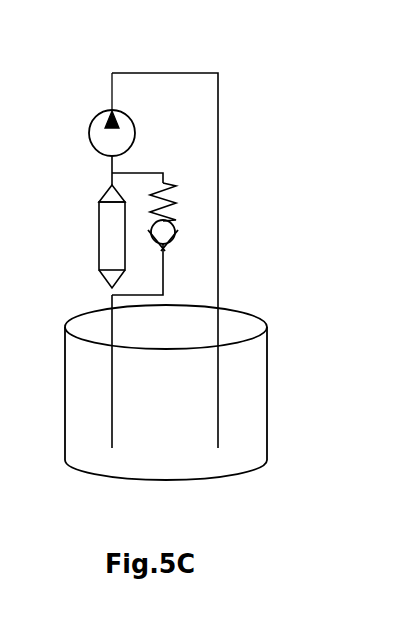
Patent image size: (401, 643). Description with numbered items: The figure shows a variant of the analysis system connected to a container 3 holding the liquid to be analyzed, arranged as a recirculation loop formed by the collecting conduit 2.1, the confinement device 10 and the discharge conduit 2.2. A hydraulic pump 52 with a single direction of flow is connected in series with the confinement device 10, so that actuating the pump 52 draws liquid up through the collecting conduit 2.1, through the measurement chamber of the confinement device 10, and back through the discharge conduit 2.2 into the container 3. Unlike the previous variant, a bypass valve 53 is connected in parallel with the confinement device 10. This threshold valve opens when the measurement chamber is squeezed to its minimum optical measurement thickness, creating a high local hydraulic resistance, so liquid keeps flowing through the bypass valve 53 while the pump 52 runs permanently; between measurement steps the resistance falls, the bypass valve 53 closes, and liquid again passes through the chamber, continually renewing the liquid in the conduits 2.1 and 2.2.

The collecting conduit 2.1 is at (109, 355).
The discharge conduit 2.2 is at (222, 102).
The container 3 is at (62, 392).
The confinement device 10 is at (96, 237).
The hydraulic pump 52 is at (86, 134).
The bypass valve 53 is at (183, 230).